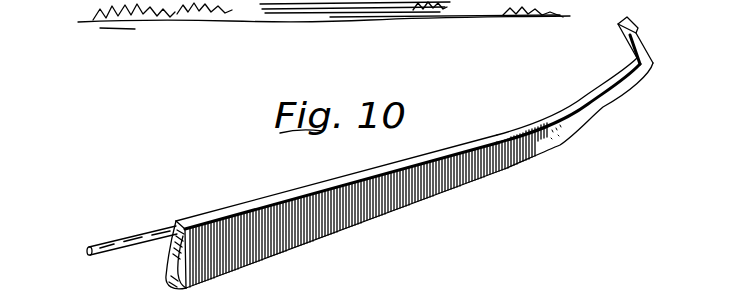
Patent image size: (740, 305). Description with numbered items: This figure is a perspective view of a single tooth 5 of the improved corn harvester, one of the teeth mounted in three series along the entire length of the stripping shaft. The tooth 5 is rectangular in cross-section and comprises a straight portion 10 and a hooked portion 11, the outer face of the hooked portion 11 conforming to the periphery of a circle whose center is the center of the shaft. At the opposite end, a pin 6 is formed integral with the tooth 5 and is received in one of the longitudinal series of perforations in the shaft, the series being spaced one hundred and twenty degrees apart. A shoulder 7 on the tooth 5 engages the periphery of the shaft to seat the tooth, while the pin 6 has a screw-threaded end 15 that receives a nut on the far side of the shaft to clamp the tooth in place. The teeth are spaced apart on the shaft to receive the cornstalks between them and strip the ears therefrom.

The tooth 5 is at (252, 203).
The pin 6 is at (140, 234).
The shoulder 7 is at (168, 265).
The portion 10 is at (503, 162).
The hooked portion 11 is at (680, 20).
The screw-threaded end 15 is at (91, 255).